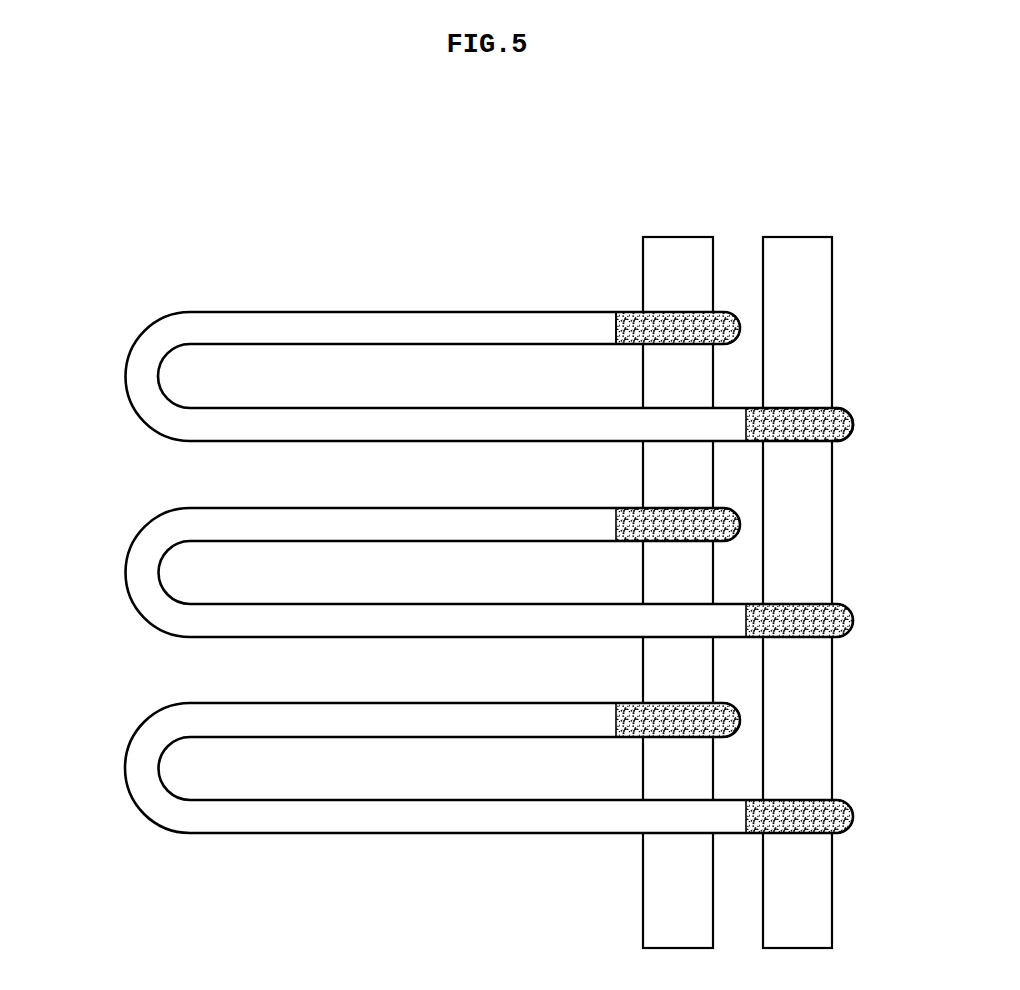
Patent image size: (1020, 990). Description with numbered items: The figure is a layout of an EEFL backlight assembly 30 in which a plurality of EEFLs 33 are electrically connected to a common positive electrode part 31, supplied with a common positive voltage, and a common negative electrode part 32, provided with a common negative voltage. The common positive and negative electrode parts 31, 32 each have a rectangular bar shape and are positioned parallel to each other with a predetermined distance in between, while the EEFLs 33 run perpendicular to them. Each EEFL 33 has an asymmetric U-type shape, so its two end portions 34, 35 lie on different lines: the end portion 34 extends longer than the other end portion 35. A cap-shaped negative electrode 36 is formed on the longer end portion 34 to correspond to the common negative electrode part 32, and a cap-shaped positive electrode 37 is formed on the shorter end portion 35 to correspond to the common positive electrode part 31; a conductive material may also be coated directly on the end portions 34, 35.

The backlight assembly 30 is at (81, 222).
The common positive electrode part 31 is at (678, 237).
The common negative electrode part 32 is at (798, 237).
The EEFL 33 is at (256, 305).
The end portion 34 is at (850, 448).
The end portion 35 is at (638, 306).
The negative electrode 36 is at (786, 418).
The positive electrode 37 is at (630, 336).